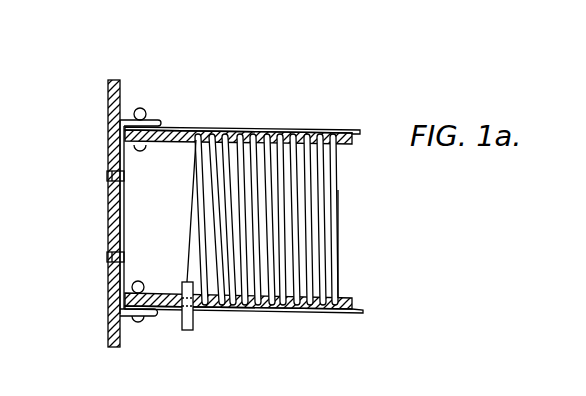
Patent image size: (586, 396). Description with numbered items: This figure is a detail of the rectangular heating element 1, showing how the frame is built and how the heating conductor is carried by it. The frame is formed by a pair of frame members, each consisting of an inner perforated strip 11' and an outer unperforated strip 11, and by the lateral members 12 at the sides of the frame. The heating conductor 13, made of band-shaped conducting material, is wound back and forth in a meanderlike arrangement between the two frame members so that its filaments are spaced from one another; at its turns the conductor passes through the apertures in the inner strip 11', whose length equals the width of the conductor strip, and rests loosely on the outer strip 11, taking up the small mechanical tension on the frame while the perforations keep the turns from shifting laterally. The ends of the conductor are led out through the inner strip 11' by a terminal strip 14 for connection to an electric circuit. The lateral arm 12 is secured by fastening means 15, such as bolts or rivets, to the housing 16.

The wire rack assembly 1 is at (203, 84).
The outer unperforated strip 11 is at (238, 213).
The inner perforated strip 11' is at (244, 219).
The lateral member 12 is at (108, 216).
The conductor 13 is at (257, 163).
The terminal strip 14 is at (193, 318).
The clamps 15 is at (108, 175).
The housing 16 is at (108, 118).